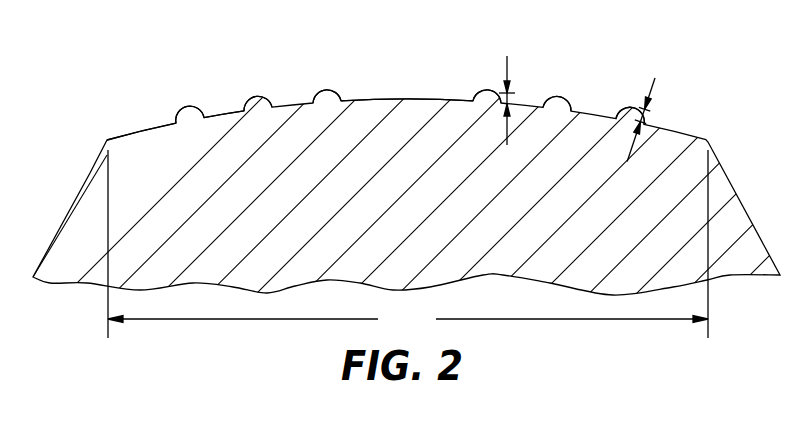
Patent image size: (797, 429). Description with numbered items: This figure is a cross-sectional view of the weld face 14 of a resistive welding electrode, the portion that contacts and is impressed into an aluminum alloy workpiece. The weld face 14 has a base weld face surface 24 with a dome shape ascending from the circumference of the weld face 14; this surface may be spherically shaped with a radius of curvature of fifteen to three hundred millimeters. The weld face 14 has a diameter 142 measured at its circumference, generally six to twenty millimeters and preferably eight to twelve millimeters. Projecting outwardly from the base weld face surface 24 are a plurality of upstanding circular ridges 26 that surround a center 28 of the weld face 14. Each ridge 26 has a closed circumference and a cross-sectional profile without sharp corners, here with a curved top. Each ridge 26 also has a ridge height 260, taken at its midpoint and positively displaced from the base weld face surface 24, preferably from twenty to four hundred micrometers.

The weld face 14 is at (228, 56).
The base weld face surface 24 is at (147, 130).
The upstanding circular ridges 26 is at (489, 92).
The center 28 is at (405, 101).
The ridge height 260 is at (509, 60).
The diameter 142 is at (408, 244).